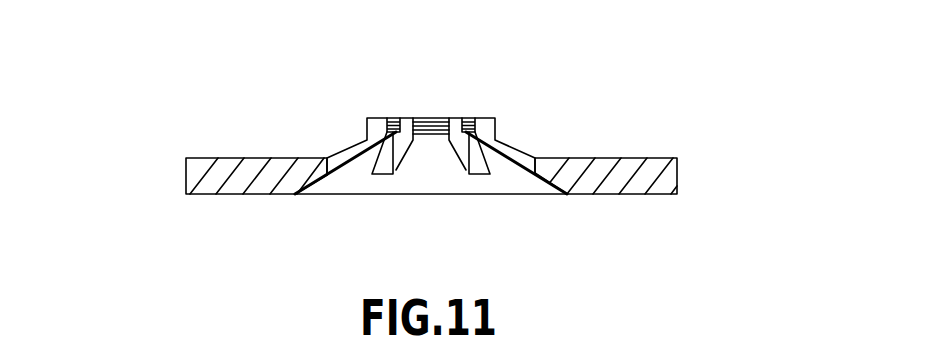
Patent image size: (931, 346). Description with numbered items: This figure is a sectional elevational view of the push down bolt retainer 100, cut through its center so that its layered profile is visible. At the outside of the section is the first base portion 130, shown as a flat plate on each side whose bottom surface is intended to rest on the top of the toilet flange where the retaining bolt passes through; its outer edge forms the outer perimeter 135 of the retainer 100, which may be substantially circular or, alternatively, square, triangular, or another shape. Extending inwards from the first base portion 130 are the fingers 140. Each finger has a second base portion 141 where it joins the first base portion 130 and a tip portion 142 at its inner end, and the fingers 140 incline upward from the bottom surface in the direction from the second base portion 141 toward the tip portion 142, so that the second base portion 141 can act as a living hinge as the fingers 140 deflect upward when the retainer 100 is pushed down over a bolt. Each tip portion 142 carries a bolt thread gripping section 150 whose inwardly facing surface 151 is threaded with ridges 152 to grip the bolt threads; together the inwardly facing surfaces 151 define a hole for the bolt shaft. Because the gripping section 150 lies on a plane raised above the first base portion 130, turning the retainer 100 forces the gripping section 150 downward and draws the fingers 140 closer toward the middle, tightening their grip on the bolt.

The retainer 100 is at (430, 154).
The first base portion 130 is at (185, 178).
The outer perimeter 135 is at (677, 180).
The fingers 140 is at (385, 118).
The second base portion 141 is at (410, 175).
The tip portion 142 is at (407, 120).
The bolt thread gripping section 150 is at (463, 107).
The inwardly facing surface 151 is at (461, 121).
The ridges 152 is at (435, 120).